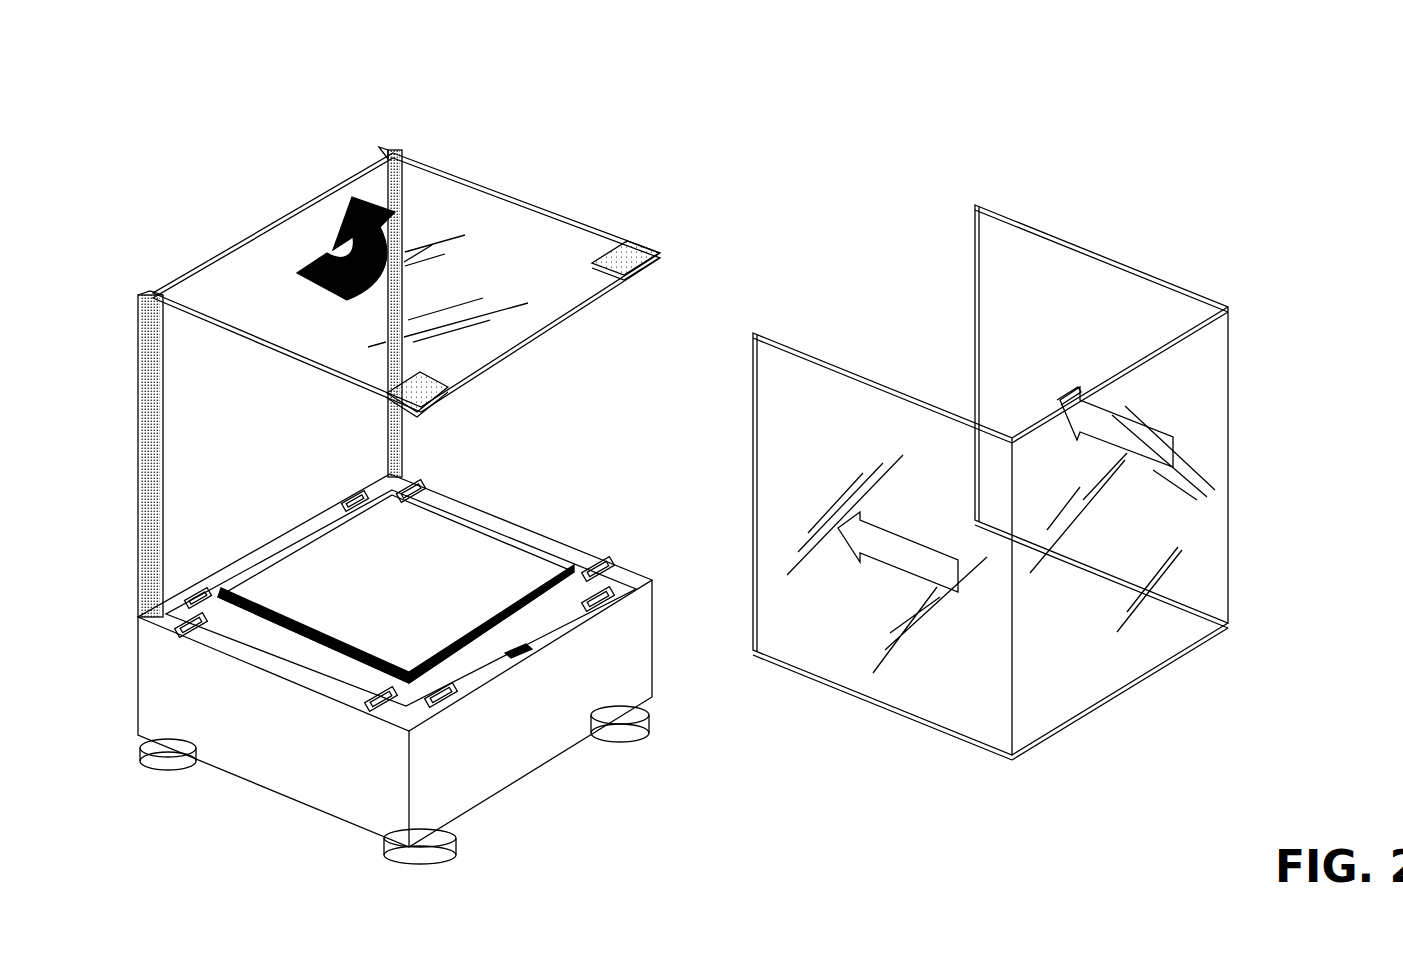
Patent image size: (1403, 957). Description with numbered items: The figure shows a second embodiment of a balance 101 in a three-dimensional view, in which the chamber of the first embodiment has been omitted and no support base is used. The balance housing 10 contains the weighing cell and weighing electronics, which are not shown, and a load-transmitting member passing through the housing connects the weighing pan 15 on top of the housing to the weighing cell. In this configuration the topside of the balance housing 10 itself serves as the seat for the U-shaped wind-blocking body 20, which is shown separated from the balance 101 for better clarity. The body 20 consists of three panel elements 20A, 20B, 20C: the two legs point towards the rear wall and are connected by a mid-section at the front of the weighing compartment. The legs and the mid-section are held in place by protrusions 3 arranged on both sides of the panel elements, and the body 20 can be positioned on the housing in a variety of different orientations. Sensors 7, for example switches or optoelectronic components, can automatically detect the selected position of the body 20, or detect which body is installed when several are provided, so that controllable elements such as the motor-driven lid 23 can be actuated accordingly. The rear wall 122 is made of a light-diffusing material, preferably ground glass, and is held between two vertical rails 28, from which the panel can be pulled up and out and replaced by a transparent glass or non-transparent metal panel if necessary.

The protrusions 3 is at (602, 564).
The sensors 7 is at (518, 646).
The balance housing 10 is at (257, 755).
The weighing pan 15 is at (449, 556).
The U-shaped body 20 is at (1233, 507).
The panel element 20A is at (1063, 295).
The panel element 20B is at (1107, 662).
The panel element 20C is at (852, 640).
The lid 23 is at (528, 225).
The vertical rails 28 is at (387, 147).
The balance 101 is at (743, 198).
The rear wall 122 is at (222, 465).